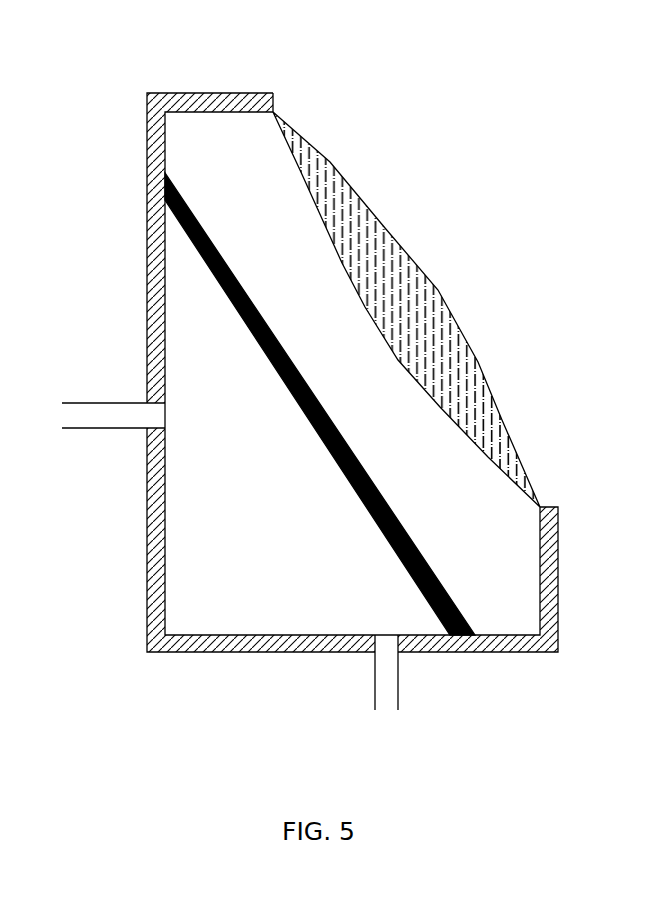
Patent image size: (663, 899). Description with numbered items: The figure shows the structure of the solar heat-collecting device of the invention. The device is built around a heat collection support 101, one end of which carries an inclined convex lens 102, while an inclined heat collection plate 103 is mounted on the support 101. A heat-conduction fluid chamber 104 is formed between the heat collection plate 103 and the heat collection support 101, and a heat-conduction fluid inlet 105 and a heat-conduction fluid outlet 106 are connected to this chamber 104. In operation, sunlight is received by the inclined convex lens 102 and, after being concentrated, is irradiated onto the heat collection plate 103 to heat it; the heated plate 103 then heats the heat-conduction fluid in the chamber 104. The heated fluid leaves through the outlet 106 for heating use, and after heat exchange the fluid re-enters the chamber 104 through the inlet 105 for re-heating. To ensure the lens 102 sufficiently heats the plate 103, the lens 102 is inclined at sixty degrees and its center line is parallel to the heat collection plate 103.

The heat collection support 101 is at (197, 100).
The inclined convex lens 102 is at (440, 322).
The heat collection plate 103 is at (403, 527).
The heat-conduction fluid chamber 104 is at (202, 600).
The heat-conduction fluid inlet 105 is at (116, 415).
The heat-conduction fluid outlet 106 is at (387, 670).